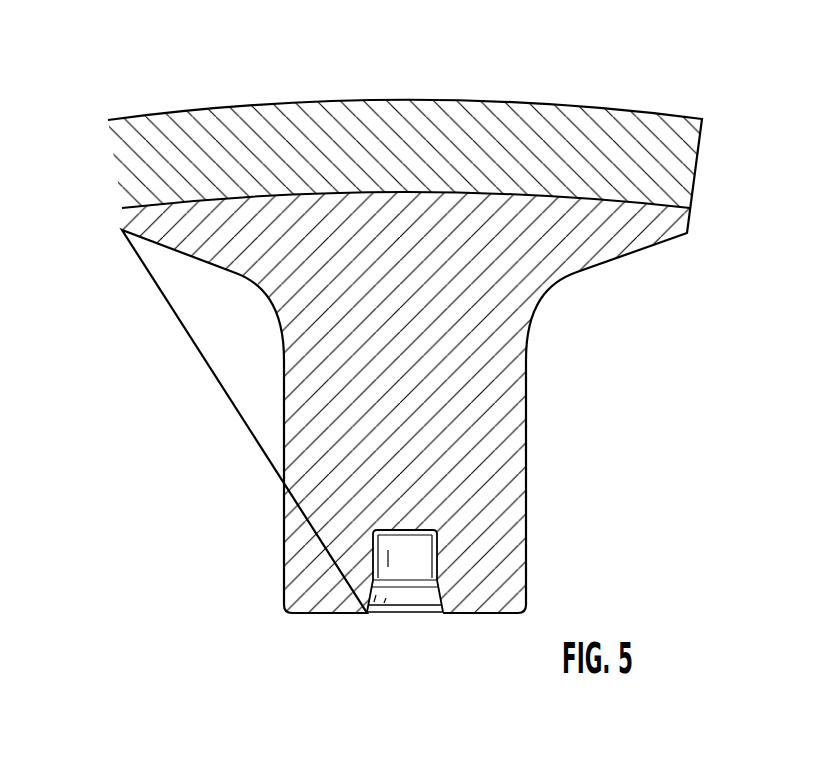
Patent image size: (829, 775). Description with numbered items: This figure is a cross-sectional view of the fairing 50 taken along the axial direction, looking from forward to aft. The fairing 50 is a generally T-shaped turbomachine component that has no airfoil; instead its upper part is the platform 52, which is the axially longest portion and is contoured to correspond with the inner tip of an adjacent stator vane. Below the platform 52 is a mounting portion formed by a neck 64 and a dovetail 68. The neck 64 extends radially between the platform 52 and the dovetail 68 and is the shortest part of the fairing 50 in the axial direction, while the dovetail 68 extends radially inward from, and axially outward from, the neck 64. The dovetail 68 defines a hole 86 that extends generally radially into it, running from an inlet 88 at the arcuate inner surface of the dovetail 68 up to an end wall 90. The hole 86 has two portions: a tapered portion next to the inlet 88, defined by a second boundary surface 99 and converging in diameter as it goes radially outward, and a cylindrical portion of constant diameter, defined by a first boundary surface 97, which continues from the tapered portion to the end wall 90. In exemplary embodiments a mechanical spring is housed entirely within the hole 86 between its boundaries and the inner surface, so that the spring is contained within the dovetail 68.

The fairing 50 is at (750, 101).
The platform 52 is at (140, 176).
The neck 64 is at (505, 420).
The dovetail 68 is at (505, 536).
The hole 86 is at (386, 571).
The inlet 88 is at (415, 613).
The end wall 90 is at (388, 530).
The first boundary surface 97 is at (435, 553).
The second boundary surface 99 is at (434, 598).